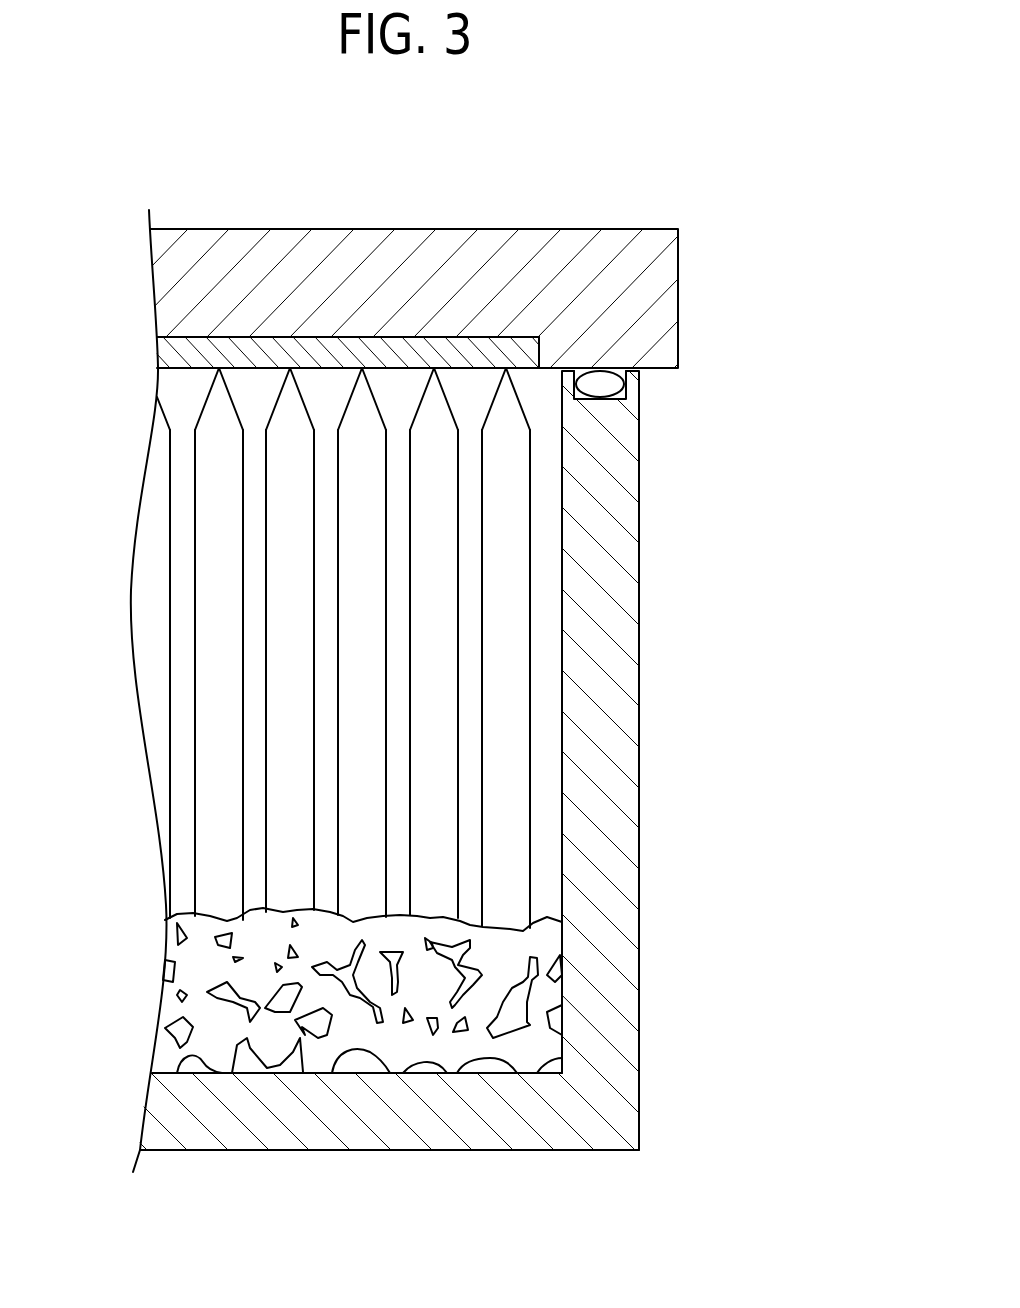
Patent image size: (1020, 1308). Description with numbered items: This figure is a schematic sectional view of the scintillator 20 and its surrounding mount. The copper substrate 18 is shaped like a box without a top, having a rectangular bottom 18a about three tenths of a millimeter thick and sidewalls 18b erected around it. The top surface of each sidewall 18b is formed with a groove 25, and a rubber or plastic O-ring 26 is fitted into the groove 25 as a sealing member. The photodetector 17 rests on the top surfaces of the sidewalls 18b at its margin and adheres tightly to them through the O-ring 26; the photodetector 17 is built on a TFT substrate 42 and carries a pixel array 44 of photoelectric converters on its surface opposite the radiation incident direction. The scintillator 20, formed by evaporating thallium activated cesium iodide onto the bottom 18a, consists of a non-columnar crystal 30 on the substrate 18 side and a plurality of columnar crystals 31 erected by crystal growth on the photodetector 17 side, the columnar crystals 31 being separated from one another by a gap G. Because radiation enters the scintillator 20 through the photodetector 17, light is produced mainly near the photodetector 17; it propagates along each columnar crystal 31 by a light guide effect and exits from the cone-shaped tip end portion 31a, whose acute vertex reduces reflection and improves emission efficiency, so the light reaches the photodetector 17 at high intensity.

The photodetector 17 is at (448, 241).
The TFT substrate 42 is at (660, 283).
The pixel array 44 is at (243, 348).
The substrate 18 is at (434, 811).
The bottom 18a is at (248, 1118).
The sidewalls 18b is at (645, 759).
The groove 25 is at (625, 397).
The O-ring 26 is at (612, 381).
The scintillator 20 is at (446, 704).
The non-columnar crystal 30 is at (542, 995).
The columnar crystals 31 is at (402, 632).
The tip end portion 31a is at (215, 400).
The gap G is at (470, 607).